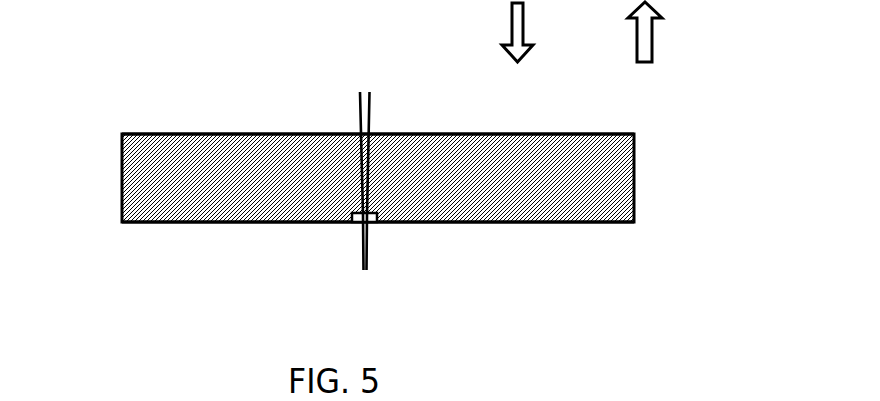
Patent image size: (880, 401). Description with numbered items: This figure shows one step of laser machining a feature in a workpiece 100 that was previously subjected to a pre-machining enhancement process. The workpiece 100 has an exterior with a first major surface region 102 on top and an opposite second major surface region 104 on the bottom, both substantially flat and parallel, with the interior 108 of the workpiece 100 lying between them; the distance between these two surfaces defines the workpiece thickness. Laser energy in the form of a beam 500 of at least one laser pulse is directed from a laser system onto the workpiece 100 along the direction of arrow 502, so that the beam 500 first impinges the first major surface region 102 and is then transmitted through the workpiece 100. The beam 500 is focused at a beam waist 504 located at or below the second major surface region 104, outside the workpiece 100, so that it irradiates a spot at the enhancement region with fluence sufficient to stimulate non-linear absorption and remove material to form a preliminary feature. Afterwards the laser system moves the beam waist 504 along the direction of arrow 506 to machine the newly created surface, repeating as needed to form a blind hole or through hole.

The workpiece 100 is at (115, 31).
The first major surface region 102 is at (144, 129).
The second major surface region 104 is at (135, 229).
The interior 108 is at (239, 147).
The beam 500 is at (369, 102).
The arrow 502 is at (526, 37).
The beam waist 504 is at (351, 236).
The arrow 506 is at (655, 37).